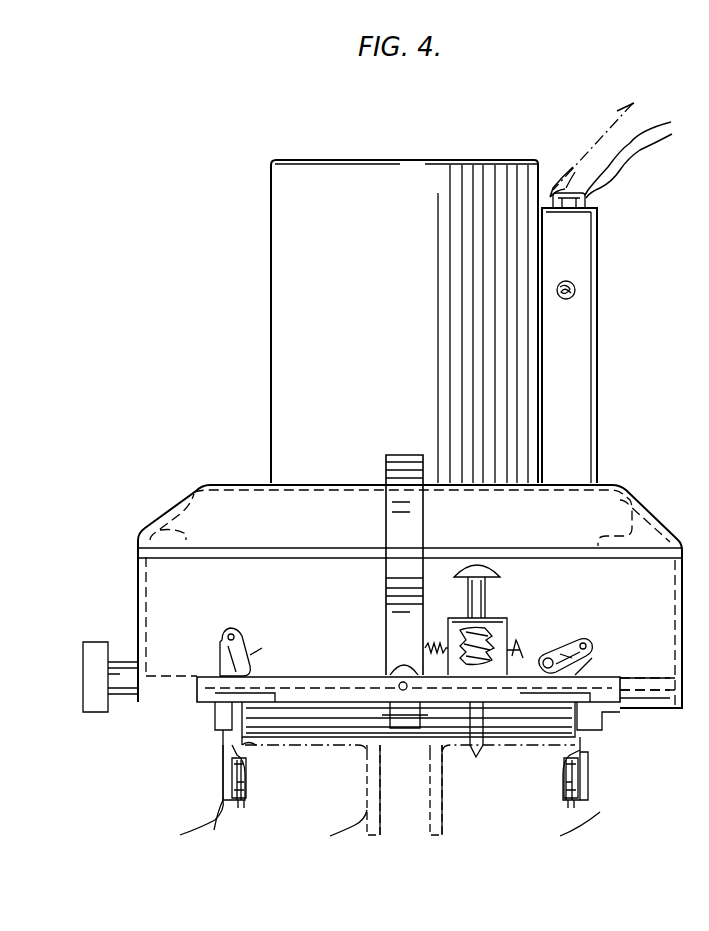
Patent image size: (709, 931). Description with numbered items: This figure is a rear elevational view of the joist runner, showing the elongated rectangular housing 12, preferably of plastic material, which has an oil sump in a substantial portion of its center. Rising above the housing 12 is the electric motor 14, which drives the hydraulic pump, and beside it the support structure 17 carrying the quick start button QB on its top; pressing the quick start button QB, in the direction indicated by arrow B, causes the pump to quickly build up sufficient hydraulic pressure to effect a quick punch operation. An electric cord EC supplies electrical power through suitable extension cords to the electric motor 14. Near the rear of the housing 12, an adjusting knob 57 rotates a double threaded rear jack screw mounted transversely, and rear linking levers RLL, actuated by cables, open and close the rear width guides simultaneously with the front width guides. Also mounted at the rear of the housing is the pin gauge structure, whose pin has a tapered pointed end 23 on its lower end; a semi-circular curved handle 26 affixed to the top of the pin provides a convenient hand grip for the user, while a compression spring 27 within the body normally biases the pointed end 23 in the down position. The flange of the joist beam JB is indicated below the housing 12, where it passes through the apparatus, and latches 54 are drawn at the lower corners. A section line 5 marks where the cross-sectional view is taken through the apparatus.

The section line 5- 5 is at (595, 468).
The electric motor 14 is at (366, 341).
The support structure 17 is at (572, 395).
The quick start button QB is at (586, 202).
The button depression direction B is at (567, 205).
The electric cord EC is at (576, 287).
The housing 12 is at (260, 601).
The semi-circular curved handle 26 is at (502, 572).
The compression spring 27 is at (498, 650).
The rear linking levers RLL is at (214, 634).
The adjusting knob 57 is at (96, 645).
The joist beam JB is at (366, 822).
The tapered pointed end 23 is at (472, 760).
The latch 54 is at (238, 808).